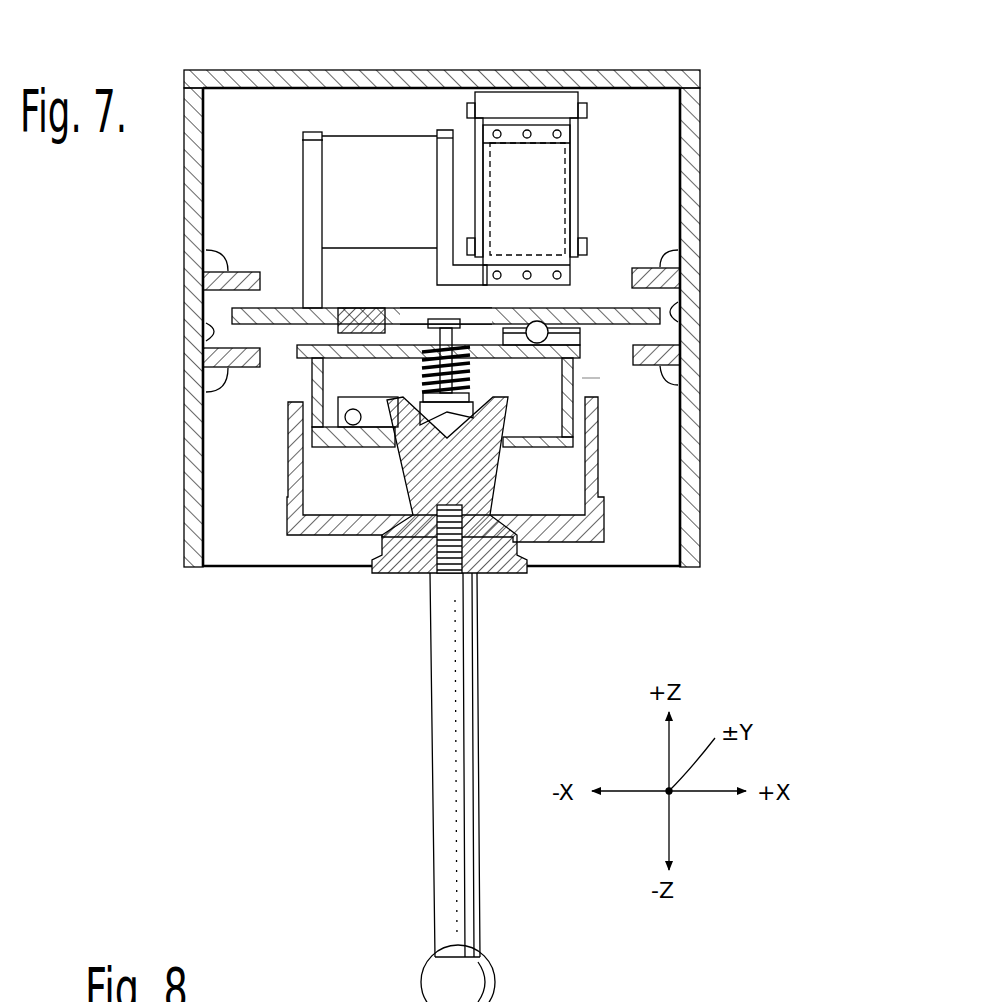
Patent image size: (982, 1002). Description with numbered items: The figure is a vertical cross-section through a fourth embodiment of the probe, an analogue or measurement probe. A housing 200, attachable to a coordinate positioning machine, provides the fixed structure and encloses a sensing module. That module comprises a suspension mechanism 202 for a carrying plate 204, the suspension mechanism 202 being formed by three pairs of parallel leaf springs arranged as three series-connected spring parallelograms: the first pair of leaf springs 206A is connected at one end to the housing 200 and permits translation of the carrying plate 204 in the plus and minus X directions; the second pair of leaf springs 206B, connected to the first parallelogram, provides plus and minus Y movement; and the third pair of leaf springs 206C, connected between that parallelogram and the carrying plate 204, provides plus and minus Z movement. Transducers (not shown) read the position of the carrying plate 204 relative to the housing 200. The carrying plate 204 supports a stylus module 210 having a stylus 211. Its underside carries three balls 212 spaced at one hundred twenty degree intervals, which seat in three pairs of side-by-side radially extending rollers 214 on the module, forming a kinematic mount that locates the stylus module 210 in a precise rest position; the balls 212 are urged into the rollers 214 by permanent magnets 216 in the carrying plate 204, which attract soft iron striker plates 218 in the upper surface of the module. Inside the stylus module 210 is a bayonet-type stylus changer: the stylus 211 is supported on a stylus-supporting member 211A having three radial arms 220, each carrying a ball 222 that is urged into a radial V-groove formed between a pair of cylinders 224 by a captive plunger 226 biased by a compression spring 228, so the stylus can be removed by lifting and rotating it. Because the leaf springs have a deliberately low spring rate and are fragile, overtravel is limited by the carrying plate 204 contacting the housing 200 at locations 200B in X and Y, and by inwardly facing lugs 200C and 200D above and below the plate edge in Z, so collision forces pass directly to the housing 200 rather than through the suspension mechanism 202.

The housing 200 is at (690, 116).
The housing contact locations 200B is at (210, 340).
The upper inwardly facing lug 200C is at (222, 268).
The lower inwardly facing lug 200D is at (215, 397).
The suspension mechanism 202 is at (440, 122).
The carrying plate 204 is at (232, 316).
The first pair of leaf springs 206A is at (470, 135).
The second pair of leaf springs 206B is at (543, 160).
The third pair of leaf springs 206C is at (350, 250).
The stylus module 210 is at (590, 378).
The stylus 211 is at (445, 750).
The stylus-supporting member 211A is at (410, 455).
The balls 212 is at (540, 322).
The rollers 214 is at (550, 336).
The permanent magnets 216 is at (365, 307).
The soft iron striker plates 218 is at (305, 385).
The radial arms 220 is at (392, 412).
The ball 222 is at (355, 445).
The cylinders 224 is at (290, 437).
The captive plunger 226 is at (440, 318).
The compression spring 228 is at (470, 373).